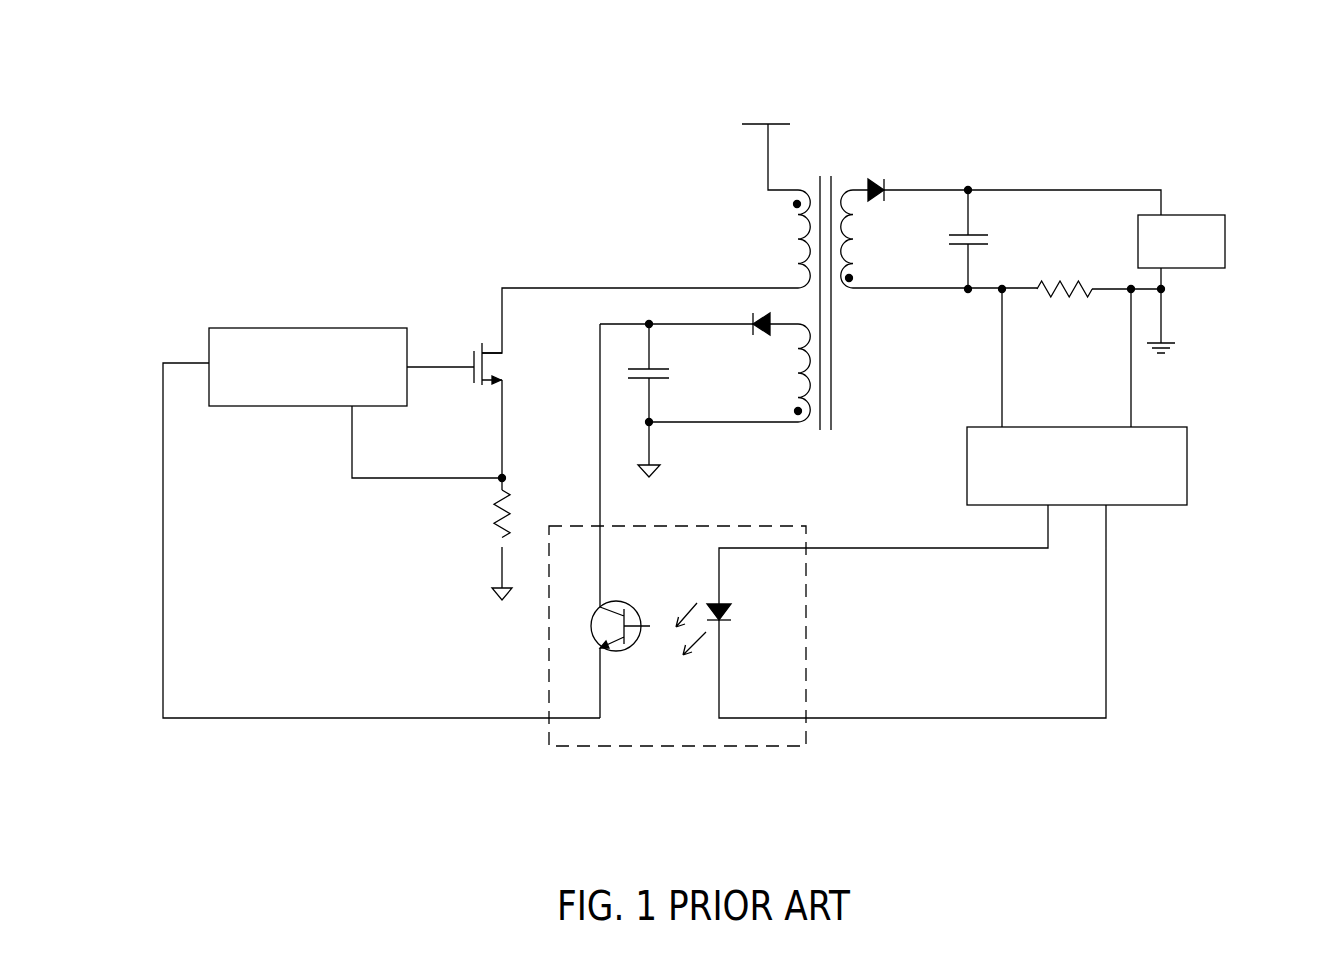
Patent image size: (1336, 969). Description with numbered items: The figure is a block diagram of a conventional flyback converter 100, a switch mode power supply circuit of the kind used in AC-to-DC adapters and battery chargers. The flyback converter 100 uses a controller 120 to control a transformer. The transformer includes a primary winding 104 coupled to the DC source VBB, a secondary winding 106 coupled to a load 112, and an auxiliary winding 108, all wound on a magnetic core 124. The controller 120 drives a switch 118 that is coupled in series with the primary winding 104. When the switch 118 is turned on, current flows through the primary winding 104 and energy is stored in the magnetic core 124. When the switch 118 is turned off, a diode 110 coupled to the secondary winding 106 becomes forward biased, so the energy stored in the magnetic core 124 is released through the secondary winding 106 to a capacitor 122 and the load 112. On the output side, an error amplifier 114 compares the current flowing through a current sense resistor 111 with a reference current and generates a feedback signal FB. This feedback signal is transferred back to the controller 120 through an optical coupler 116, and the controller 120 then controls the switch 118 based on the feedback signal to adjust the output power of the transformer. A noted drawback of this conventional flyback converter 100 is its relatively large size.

The flyback converter 100 is at (336, 139).
The primary winding 104 is at (799, 262).
The secondary winding 106 is at (847, 262).
The auxiliary winding 108 is at (798, 396).
The diode 110 is at (884, 186).
The current sense resistor 111 is at (1068, 294).
The load 112 is at (1200, 215).
The error amplifier 114 is at (1172, 427).
The optical coupler 116 is at (714, 526).
The switch 118 is at (474, 374).
The controller 120 is at (300, 406).
The capacitor 122 is at (975, 234).
The magnetic core 124 is at (832, 392).